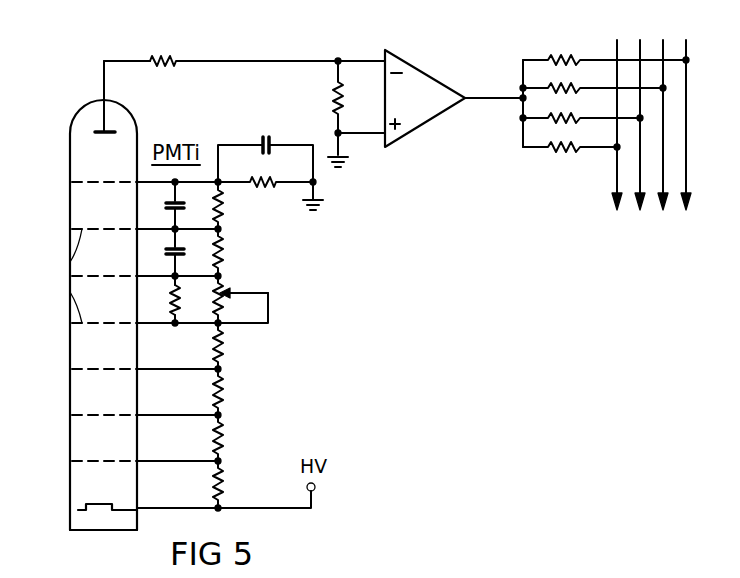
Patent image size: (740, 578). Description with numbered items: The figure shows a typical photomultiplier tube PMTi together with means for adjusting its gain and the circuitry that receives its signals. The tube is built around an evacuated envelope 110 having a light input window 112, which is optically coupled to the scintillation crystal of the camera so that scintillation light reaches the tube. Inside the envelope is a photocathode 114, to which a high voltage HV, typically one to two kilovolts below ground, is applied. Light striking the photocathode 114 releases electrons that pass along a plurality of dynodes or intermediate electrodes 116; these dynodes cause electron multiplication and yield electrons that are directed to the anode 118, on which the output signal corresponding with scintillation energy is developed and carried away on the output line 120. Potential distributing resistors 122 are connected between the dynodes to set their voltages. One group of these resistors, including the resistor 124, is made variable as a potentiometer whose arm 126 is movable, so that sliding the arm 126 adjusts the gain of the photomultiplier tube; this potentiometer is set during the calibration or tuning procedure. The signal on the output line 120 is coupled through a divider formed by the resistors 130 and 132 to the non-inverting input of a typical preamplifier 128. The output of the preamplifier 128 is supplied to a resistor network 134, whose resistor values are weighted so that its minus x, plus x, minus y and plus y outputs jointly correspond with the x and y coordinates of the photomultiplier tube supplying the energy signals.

The evacuated envelope 110 is at (70, 369).
The light input window 112 is at (100, 532).
The photocathode 114 is at (93, 503).
The dynodes 116 is at (70, 292).
The anode 118 is at (100, 131).
The output line 120 is at (121, 60).
The potential distributing resistors 122 is at (226, 480).
The resistor 124 is at (223, 300).
The potentiometer arm 126 is at (233, 292).
The preamplifier 128 is at (433, 88).
The resistor 130 is at (152, 56).
The resistor 132 is at (332, 97).
The resistor network 134 is at (563, 157).